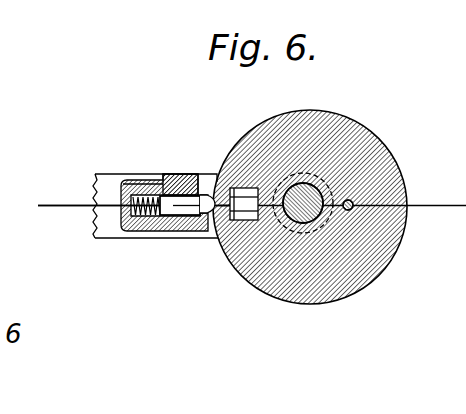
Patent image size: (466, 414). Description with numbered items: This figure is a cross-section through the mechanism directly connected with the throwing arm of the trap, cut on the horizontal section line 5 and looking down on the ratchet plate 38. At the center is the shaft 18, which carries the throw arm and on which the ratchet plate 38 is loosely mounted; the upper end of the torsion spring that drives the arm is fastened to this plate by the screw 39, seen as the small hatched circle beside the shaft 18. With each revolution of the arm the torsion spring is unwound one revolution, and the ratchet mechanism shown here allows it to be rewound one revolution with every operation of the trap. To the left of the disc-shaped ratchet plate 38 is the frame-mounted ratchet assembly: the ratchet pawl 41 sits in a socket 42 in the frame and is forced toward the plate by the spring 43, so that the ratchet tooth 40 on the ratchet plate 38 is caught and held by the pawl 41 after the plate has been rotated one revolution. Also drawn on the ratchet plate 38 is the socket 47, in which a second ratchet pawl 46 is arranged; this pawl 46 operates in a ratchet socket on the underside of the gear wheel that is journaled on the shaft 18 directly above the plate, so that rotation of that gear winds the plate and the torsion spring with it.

The flange 5 is at (242, 203).
The shaft 18 is at (323, 178).
The ratchet plate 38 is at (262, 288).
The screw 39 is at (354, 203).
The ratchet tooth 40 is at (200, 241).
The ratchet pawl 41 is at (181, 203).
The socket 42 is at (166, 195).
The spring 43 is at (140, 233).
The ratchet pawl 46 is at (211, 232).
The socket 47 is at (240, 222).